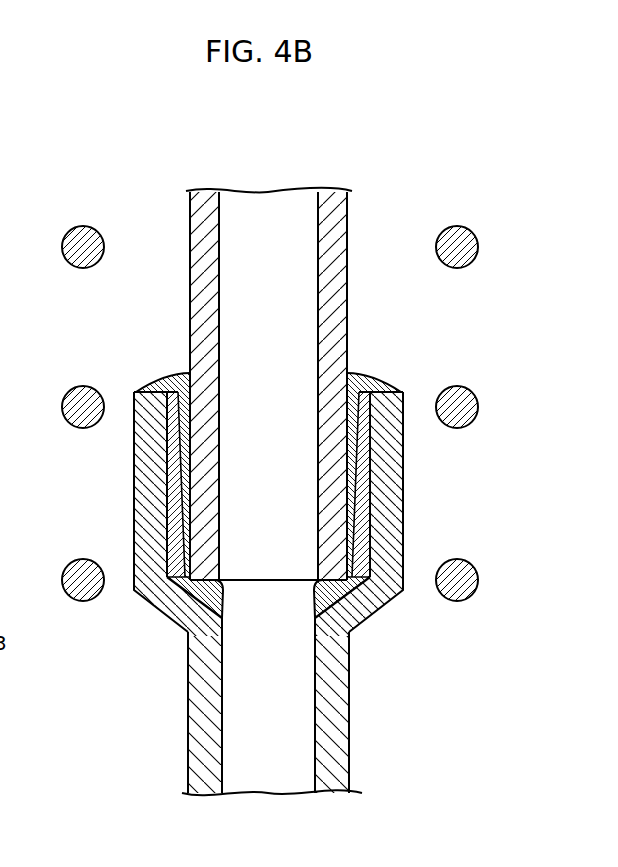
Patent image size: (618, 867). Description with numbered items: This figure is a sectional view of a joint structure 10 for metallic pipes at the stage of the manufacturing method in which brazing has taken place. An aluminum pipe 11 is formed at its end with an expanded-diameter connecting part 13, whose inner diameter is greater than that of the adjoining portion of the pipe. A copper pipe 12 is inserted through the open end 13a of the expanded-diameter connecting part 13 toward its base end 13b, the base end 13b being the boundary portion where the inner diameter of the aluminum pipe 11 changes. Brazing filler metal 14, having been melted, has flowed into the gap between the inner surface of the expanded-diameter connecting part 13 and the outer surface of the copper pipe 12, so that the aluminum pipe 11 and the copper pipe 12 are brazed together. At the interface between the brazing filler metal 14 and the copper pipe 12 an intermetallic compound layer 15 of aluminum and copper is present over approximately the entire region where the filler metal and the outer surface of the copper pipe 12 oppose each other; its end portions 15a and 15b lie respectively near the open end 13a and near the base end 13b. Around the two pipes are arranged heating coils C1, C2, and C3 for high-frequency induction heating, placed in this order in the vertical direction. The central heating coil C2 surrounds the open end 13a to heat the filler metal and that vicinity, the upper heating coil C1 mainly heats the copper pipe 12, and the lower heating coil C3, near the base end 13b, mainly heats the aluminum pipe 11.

The tube connection structure 10 is at (133, 197).
The aluminum pipe 11 is at (355, 707).
The copper pipe 12 is at (352, 235).
The expanded-diameter connecting part 13 is at (134, 529).
The open end 13a is at (137, 390).
The base end 13b is at (231, 621).
The brazing filler metal 14 is at (175, 510).
The intermetallic compound layer 15 is at (185, 464).
The end portion of the intermetallic compound layer 15a is at (183, 370).
The end portion of the intermetallic compound layer 15b is at (203, 593).
The heating coil C1 is at (75, 226).
The heating coil C2 is at (72, 387).
The heating coil C3 is at (68, 566).